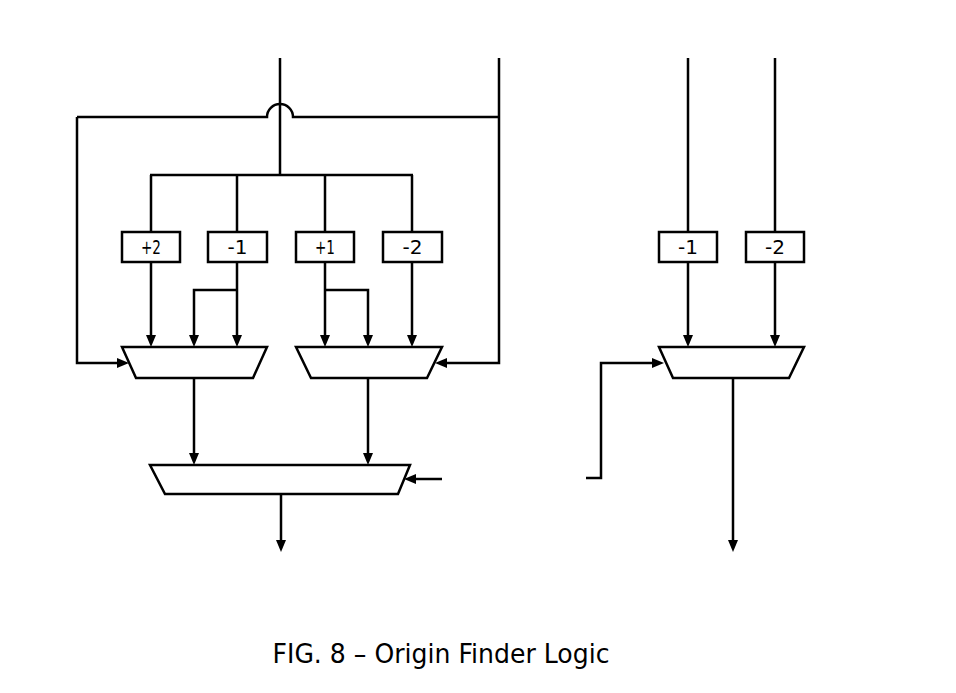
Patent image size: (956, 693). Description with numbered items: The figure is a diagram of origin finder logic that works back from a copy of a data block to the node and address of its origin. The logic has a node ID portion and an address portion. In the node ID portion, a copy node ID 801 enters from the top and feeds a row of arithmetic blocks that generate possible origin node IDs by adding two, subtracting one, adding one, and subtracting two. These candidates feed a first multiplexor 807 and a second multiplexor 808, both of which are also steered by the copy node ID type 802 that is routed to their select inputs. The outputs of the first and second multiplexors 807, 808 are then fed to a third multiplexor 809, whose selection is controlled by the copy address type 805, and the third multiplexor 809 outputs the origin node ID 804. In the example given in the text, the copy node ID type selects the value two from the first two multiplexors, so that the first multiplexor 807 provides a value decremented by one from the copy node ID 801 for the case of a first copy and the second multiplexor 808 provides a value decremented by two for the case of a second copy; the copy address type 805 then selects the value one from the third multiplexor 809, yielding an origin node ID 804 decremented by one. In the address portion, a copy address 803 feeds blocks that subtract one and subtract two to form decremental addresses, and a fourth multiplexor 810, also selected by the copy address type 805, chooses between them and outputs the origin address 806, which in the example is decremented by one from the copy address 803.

The copy node ID 801 is at (288, 186).
The copy node ID type 802 is at (499, 186).
The copy address 803 is at (731, 190).
The origin node ID 804 is at (281, 536).
The copy address type 805 is at (534, 431).
The origin address 806 is at (731, 479).
The first multiplexor 807 is at (165, 391).
The second multiplexor 808 is at (338, 391).
The third multiplexor 809 is at (180, 508).
The fourth multiplexor 810 is at (702, 391).